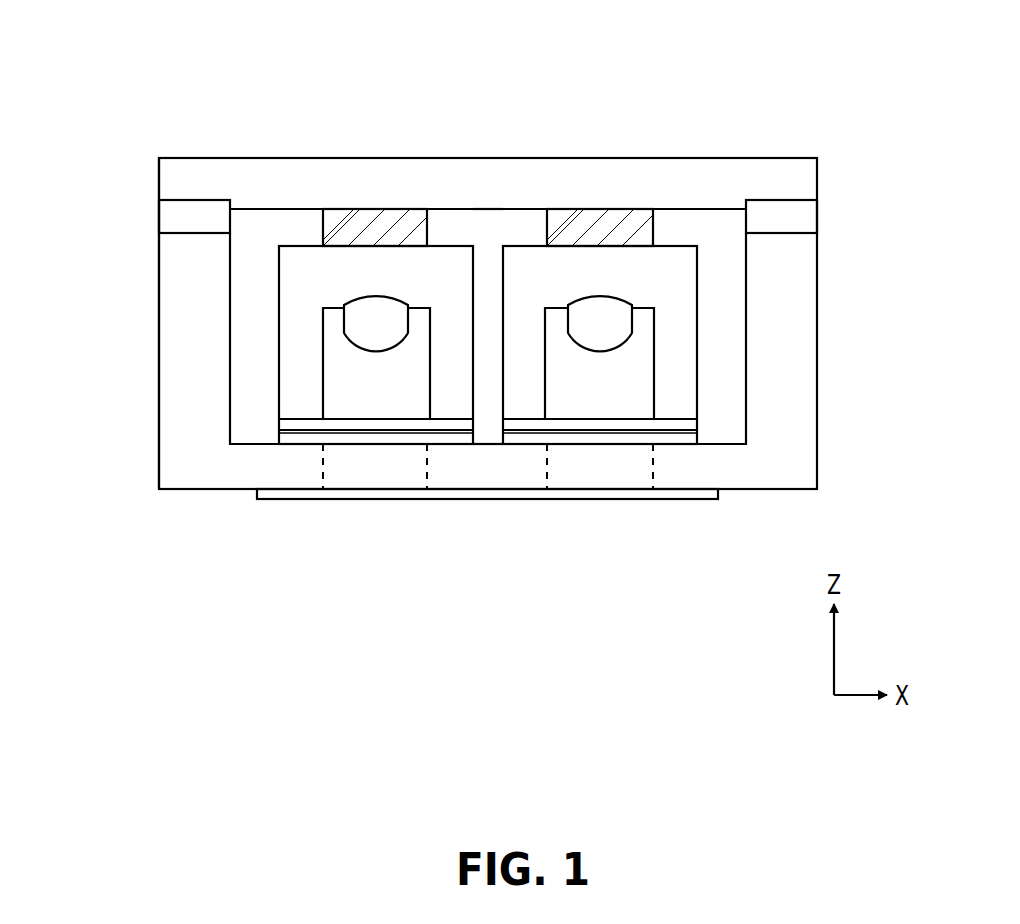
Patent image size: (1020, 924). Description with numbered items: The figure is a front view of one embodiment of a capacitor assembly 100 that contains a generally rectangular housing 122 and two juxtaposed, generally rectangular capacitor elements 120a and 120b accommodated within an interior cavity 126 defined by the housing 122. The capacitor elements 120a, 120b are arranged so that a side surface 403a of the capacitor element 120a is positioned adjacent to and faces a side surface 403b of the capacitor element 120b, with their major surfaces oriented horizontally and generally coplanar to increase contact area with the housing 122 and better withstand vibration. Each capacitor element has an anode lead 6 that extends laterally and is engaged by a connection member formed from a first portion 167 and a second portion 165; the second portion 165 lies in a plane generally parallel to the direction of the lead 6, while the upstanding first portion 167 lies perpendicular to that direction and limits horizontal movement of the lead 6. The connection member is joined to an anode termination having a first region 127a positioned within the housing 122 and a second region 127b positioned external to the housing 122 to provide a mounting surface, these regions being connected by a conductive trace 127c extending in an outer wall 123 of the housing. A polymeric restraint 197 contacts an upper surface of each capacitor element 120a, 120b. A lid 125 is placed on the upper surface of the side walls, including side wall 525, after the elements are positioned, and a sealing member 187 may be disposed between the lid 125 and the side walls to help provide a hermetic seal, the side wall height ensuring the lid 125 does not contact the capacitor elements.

The capacitor assembly 100 is at (874, 126).
The lid 125 is at (474, 177).
The interior cavity 126 is at (705, 233).
The sealing member 187 is at (175, 219).
The side wall 525 is at (185, 337).
The polymeric restraint 197 is at (367, 215).
The capacitor element 120a is at (291, 290).
The capacitor element 120b is at (683, 290).
The side surface 403a is at (473, 297).
The side surface 403b is at (501, 351).
The first portion 167 is at (357, 401).
The anode lead 6 is at (373, 314).
The second portion 165 is at (692, 423).
The first region 127a is at (355, 439).
The second region 127b is at (490, 501).
The conductive trace 127c is at (345, 478).
The outer wall 123 is at (737, 478).
The housing 122 is at (137, 462).